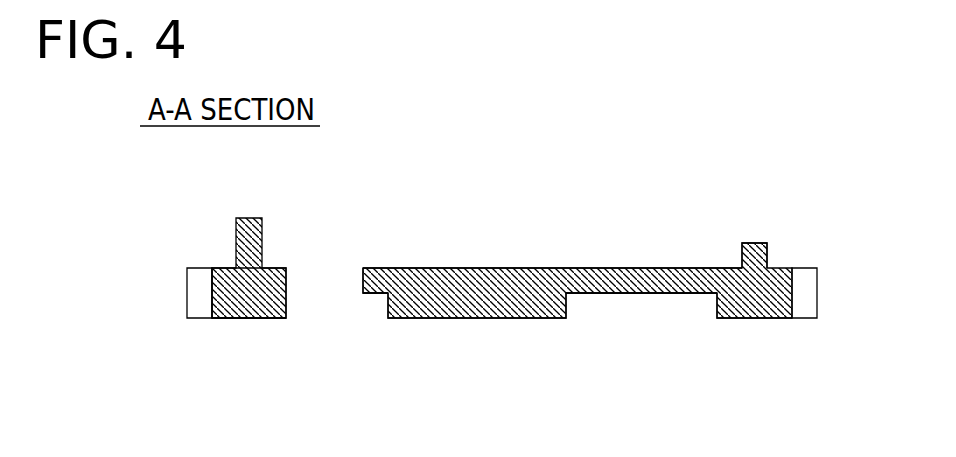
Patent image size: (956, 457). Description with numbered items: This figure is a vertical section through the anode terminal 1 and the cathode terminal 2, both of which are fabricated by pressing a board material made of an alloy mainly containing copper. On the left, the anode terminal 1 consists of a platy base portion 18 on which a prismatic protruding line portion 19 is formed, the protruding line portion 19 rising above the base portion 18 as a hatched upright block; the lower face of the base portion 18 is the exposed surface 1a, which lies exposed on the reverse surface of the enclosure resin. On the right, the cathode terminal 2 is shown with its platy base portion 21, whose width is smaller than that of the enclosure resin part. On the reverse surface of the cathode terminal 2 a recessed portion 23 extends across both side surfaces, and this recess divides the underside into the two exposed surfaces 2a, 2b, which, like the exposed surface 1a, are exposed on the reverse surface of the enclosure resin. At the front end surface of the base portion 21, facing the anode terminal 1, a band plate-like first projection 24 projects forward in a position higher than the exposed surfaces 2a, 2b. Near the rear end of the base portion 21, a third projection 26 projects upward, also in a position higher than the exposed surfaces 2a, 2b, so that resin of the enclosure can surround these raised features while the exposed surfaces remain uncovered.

The anode terminal 1 is at (188, 289).
The exposed surface 1a is at (262, 318).
The base portion 18 is at (232, 313).
The protruding line portion 19 is at (247, 232).
The cathode terminal 2 is at (777, 268).
The exposed surface 2a is at (482, 318).
The exposed surface 2b is at (752, 318).
The base portion 21 is at (642, 275).
The recessed portion 23 is at (613, 295).
The first projection 24 is at (363, 277).
The third projection 26 is at (755, 248).